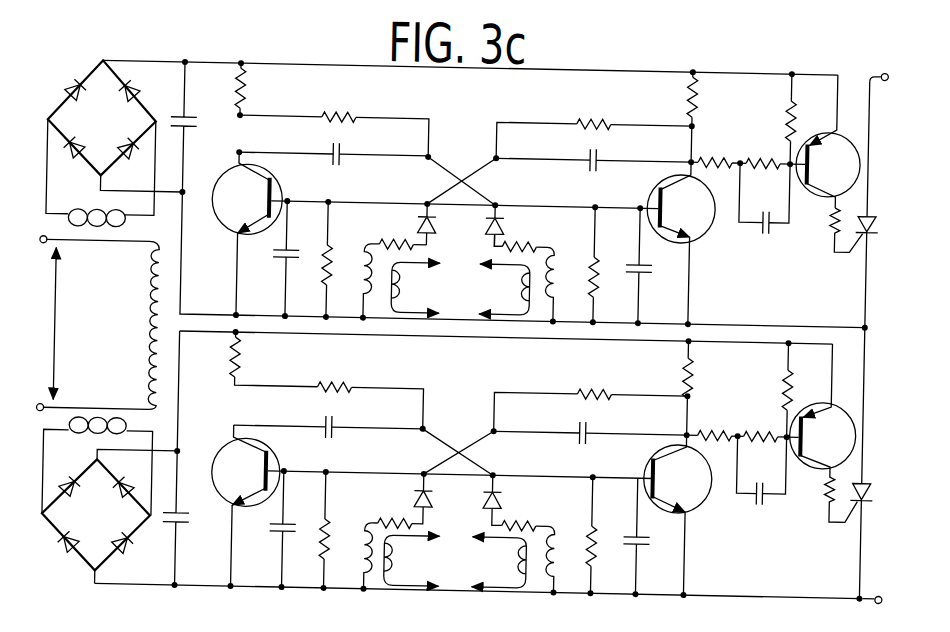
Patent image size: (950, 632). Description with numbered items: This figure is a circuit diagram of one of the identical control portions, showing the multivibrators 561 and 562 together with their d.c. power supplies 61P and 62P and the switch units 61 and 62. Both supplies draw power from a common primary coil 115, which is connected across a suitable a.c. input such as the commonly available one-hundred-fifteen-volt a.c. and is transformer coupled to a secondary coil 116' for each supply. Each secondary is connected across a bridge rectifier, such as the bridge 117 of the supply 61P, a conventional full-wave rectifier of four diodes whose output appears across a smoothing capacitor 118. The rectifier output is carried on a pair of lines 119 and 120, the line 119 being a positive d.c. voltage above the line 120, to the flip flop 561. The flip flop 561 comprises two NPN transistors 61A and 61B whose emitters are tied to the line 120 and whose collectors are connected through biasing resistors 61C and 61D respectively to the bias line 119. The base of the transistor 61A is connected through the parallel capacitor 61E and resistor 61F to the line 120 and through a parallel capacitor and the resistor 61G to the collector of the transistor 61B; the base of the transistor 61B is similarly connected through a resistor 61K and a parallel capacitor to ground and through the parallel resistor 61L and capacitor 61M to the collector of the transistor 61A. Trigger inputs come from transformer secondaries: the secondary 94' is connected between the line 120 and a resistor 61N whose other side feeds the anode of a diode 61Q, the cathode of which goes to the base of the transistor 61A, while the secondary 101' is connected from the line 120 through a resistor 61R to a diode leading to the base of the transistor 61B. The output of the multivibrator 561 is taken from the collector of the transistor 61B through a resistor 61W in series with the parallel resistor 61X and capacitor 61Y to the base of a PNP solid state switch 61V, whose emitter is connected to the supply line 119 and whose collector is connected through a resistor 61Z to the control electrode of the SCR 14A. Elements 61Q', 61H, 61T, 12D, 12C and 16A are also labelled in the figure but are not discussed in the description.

The d.c. power supply 61P is at (205, 53).
The bridge rectifier 117 is at (116, 130).
The smoothing capacitor 118 is at (197, 128).
The secondary coil 116' is at (99, 317).
The primary coil 115 is at (153, 329).
The output line 119 is at (338, 56).
The output line 120 is at (186, 300).
The multivibrator 561 is at (550, 104).
The biasing resistor 61C is at (247, 82).
The resistor 61L is at (337, 110).
The capacitor 61M is at (344, 148).
The NPN transistor 61A is at (215, 214).
The capacitor 61E is at (278, 257).
The resistor 61F is at (326, 256).
The resistor 61N is at (406, 236).
The diode 61Q is at (446, 225).
The trigger diode junction 61Q' is at (470, 242).
The resistor 61R is at (505, 228).
The transformer secondary 94' is at (418, 287).
The transformer secondary 101' is at (500, 289).
The resistor 61K is at (613, 265).
The resistor 61G is at (589, 106).
The cross-coupling capacitor 61H is at (602, 145).
The biasing resistor 61D is at (699, 91).
The NPN transistor 61B is at (704, 220).
The switch unit 61 is at (892, 37).
The bias resistor 61T is at (786, 99).
The resistor 61W is at (716, 147).
The resistor 61X is at (781, 145).
The capacitor 61Y is at (773, 224).
The solid state switch 61V is at (816, 114).
The resistor 61Z is at (833, 212).
The SCR 14A is at (866, 229).
The terminal 12D is at (883, 59).
The terminal 12C is at (890, 590).
The d.c. power supply 62P is at (222, 630).
The multivibrator 562 is at (550, 374).
The switch unit 62 is at (790, 536).
The main SCR 16A is at (864, 497).